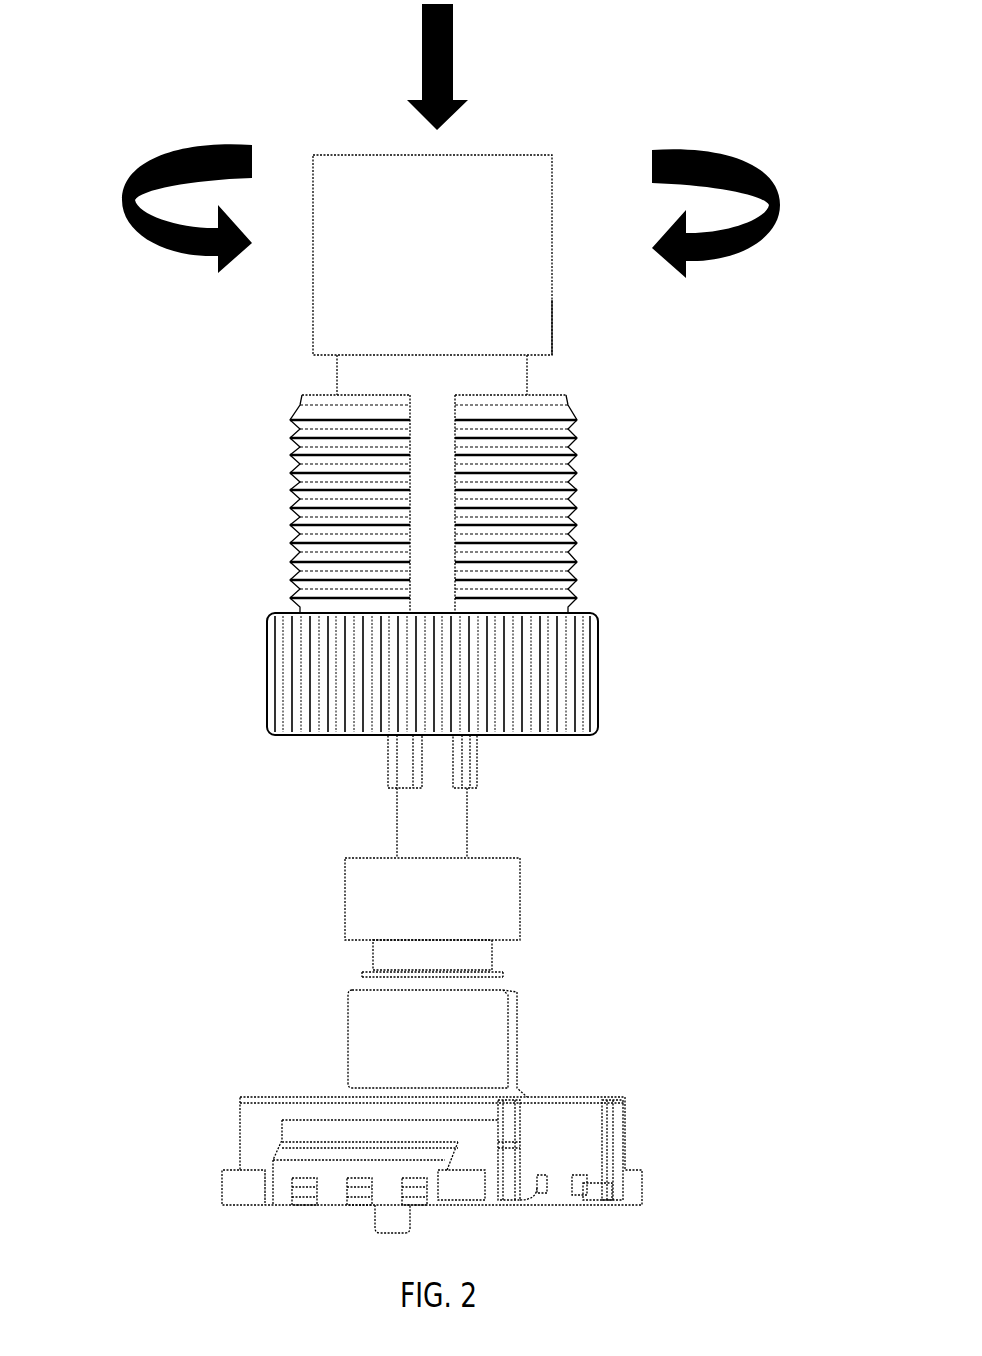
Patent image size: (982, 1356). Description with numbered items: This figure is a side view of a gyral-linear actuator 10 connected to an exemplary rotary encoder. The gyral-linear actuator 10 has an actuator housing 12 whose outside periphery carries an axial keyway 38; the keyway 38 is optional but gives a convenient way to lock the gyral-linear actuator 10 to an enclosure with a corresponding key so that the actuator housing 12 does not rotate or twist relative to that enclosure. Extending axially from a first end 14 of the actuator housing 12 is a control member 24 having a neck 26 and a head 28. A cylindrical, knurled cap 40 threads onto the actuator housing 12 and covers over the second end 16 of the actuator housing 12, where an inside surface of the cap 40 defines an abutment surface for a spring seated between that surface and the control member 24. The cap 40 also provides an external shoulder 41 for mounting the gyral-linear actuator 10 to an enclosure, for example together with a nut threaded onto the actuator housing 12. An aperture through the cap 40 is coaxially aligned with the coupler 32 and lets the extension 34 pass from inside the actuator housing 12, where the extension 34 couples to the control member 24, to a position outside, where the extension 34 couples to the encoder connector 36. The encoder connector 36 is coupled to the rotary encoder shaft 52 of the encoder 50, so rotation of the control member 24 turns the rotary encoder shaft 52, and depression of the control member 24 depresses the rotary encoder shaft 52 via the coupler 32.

The gyral-linear actuator 10 is at (247, 100).
The actuator housing 12 is at (395, 503).
The first end 14 is at (395, 472).
The second end 16 is at (417, 677).
The control member 24 is at (578, 170).
The neck 26 is at (527, 370).
The head 28 is at (553, 313).
The coupler 32 is at (373, 916).
The extension 34 is at (468, 806).
The encoder connector 36 is at (345, 905).
The keyway 38 is at (428, 489).
The cap 40 is at (568, 672).
The external shoulder 41 is at (598, 622).
The encoder 50 is at (238, 1137).
The rotary encoder shaft 52 is at (397, 972).